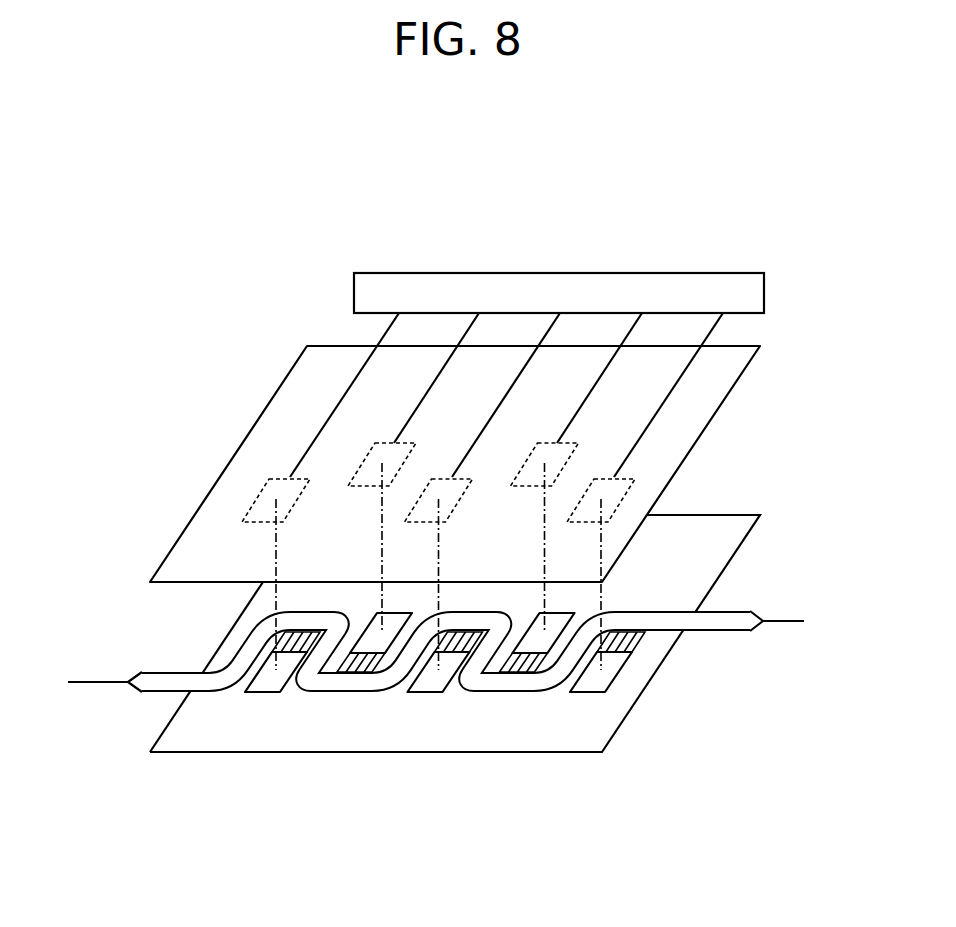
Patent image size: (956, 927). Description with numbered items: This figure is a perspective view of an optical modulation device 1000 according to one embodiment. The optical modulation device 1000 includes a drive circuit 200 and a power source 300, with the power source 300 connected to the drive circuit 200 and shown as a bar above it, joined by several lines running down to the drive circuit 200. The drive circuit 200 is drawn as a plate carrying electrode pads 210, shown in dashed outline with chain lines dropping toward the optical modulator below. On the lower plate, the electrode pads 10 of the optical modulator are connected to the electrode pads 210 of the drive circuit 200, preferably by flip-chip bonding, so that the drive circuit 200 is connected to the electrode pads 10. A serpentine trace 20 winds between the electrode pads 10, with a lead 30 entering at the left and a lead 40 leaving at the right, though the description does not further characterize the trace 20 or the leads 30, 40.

The optical modulation device 1000 is at (664, 230).
The power source 300 is at (387, 282).
The drive circuit 200 is at (262, 448).
The electrode pads of the drive circuit 210 is at (243, 506).
The serpentine wiring 20 is at (670, 630).
The electrode pads 10 is at (607, 672).
The input lead wire 30 is at (100, 681).
The output lead wire 40 is at (754, 629).